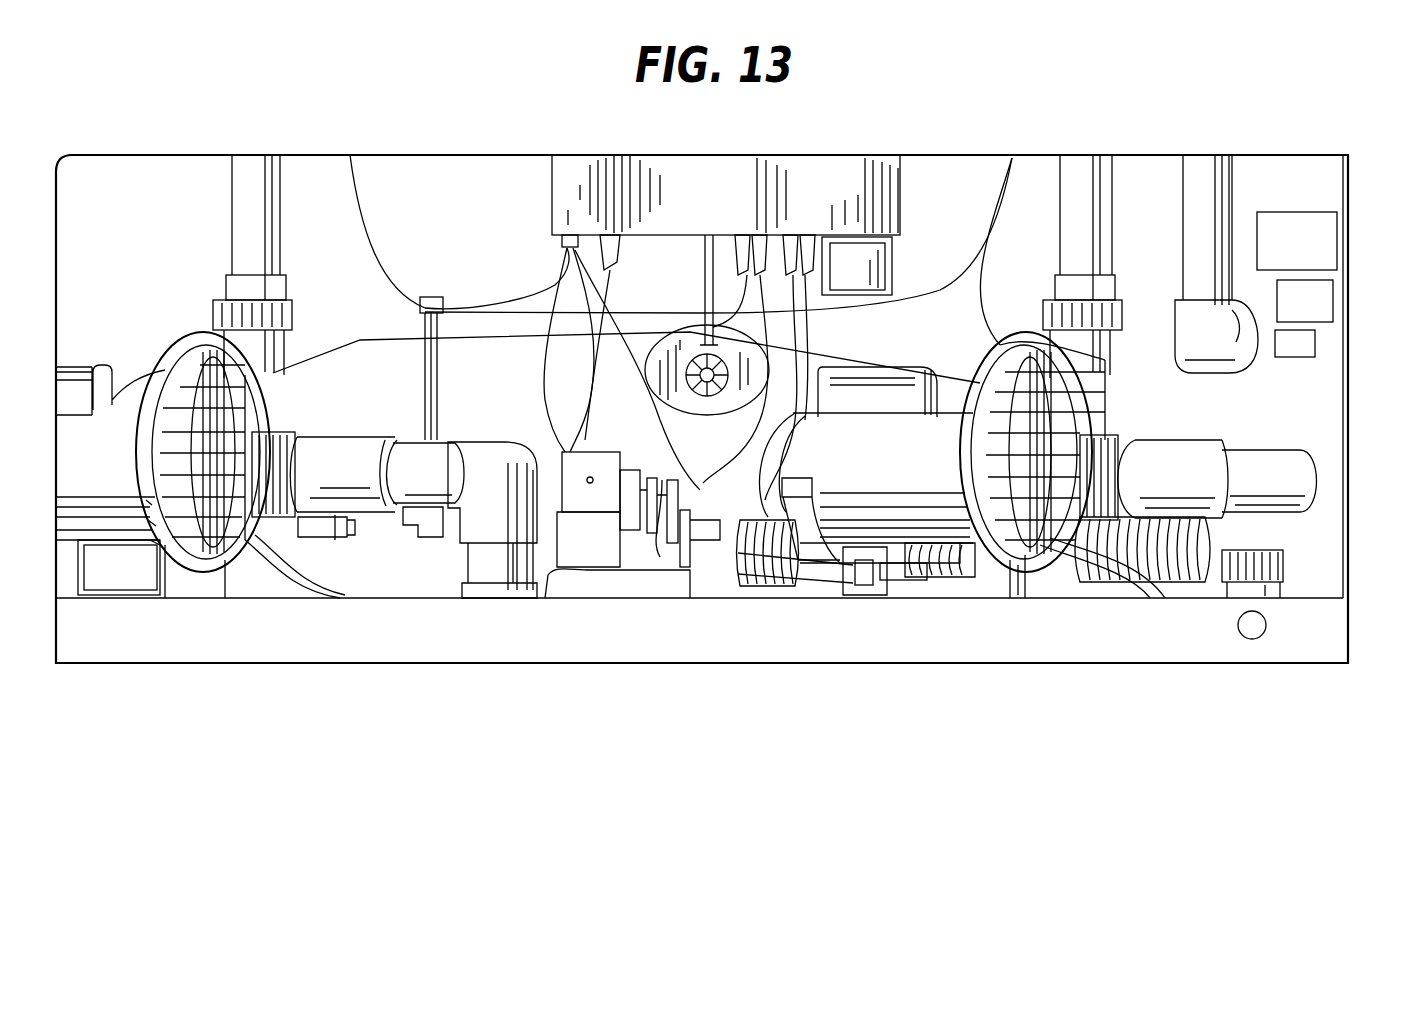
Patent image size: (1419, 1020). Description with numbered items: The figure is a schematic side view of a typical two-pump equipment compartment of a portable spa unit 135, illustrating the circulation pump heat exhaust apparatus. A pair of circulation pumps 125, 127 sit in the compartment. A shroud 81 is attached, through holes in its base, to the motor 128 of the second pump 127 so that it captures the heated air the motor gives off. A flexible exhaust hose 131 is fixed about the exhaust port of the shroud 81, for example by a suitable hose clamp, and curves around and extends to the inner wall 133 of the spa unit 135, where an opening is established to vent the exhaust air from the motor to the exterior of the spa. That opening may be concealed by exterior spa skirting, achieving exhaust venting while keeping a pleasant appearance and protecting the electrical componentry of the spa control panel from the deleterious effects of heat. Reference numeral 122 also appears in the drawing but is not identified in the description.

The portable spa unit 135 is at (243, 140).
The circulation pump 125 is at (197, 572).
The circulation pump 127 is at (1118, 412).
The motor 128 is at (900, 500).
The shroud 81 is at (805, 527).
The drain hose 122 is at (1046, 575).
The flexible exhaust hose 131 is at (1195, 583).
The inner wall 133 is at (1272, 527).